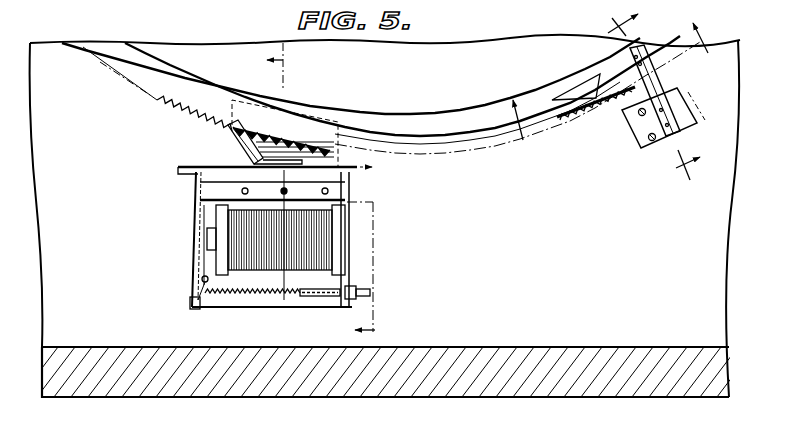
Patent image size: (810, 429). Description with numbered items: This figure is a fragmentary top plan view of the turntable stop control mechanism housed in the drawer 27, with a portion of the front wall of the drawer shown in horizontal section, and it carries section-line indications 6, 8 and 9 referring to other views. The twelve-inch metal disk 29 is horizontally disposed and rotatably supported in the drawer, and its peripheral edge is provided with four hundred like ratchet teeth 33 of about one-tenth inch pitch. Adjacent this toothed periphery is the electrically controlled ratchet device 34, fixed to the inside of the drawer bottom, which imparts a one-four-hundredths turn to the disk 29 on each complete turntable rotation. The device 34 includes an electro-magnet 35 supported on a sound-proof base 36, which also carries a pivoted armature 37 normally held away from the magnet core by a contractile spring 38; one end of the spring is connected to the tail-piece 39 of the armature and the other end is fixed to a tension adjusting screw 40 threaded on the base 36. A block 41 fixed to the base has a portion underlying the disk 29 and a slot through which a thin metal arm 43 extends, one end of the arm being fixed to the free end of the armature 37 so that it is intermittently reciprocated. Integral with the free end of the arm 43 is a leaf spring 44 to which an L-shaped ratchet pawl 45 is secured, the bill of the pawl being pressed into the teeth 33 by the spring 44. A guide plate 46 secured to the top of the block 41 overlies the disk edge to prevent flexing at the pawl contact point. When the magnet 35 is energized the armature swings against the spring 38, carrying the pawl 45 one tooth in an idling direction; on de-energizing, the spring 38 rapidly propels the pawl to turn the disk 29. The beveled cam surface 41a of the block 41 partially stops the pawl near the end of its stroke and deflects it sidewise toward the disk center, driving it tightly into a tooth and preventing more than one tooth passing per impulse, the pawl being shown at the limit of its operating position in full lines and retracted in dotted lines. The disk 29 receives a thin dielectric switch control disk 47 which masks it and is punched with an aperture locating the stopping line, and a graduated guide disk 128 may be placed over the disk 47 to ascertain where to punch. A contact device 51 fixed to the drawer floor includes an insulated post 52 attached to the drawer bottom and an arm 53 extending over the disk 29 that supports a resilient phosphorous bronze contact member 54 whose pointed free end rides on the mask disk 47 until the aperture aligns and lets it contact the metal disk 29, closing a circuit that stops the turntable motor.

The drawer 27 is at (477, 382).
The metal disk 29 is at (478, 132).
The ratchet teeth 33 is at (241, 125).
The ratchet device 34 is at (352, 232).
The electro-magnet 35 is at (285, 300).
The sound-proof base 36 is at (343, 193).
The pivoted armature 37 is at (194, 232).
The contractile spring 38 is at (250, 297).
The tail-piece 39 is at (197, 300).
The tension adjusting screw 40 is at (331, 297).
The block 41 is at (237, 190).
The beveled cam surface 41a is at (228, 133).
The thin metal arm 43 is at (204, 166).
The leaf spring 44 is at (253, 171).
The L-shaped ratchet pawl 45 is at (256, 161).
The guide plate 46 is at (308, 123).
The switch control disk 47 is at (472, 108).
The contact device 51 is at (623, 103).
The insulated post 52 is at (657, 150).
The arm 53 is at (656, 86).
The contact member 54 is at (593, 78).
The guide disk 128 is at (425, 58).
The section line 6- 6 is at (332, 192).
The section line 8- 8 is at (646, 101).
The section line 9- 9 is at (613, 90).